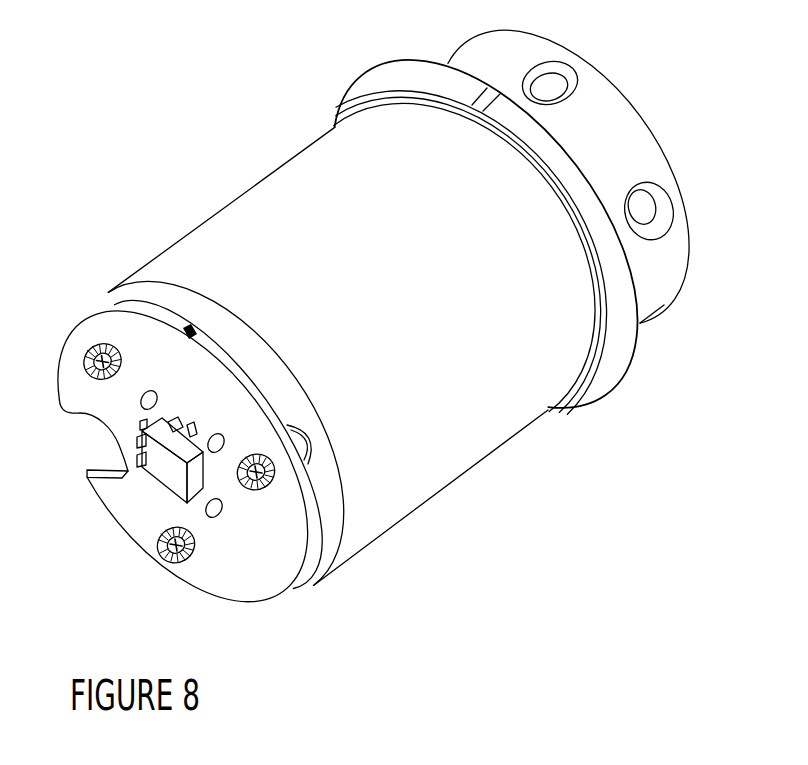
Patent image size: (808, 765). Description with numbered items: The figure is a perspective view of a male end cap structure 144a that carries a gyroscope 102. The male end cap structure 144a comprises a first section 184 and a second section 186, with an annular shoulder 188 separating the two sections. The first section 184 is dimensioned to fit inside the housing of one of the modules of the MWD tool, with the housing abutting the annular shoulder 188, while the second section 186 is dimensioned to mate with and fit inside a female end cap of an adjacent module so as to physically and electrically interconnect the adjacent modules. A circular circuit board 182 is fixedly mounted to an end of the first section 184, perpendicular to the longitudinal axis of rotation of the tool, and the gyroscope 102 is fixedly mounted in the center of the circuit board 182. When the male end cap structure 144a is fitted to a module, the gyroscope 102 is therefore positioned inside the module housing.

The male end cap structure 144a is at (146, 102).
The gyroscope 102 is at (163, 470).
The circuit board 182 is at (263, 582).
The first section 184 is at (447, 458).
The second section 186 is at (607, 130).
The annular shoulder 188 is at (622, 370).